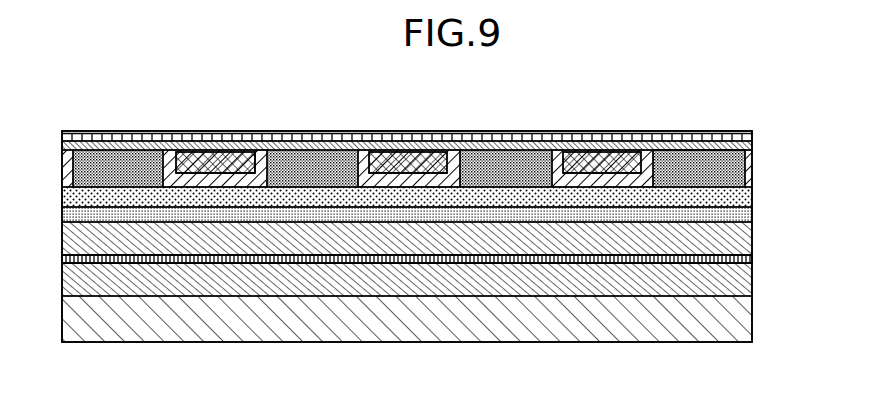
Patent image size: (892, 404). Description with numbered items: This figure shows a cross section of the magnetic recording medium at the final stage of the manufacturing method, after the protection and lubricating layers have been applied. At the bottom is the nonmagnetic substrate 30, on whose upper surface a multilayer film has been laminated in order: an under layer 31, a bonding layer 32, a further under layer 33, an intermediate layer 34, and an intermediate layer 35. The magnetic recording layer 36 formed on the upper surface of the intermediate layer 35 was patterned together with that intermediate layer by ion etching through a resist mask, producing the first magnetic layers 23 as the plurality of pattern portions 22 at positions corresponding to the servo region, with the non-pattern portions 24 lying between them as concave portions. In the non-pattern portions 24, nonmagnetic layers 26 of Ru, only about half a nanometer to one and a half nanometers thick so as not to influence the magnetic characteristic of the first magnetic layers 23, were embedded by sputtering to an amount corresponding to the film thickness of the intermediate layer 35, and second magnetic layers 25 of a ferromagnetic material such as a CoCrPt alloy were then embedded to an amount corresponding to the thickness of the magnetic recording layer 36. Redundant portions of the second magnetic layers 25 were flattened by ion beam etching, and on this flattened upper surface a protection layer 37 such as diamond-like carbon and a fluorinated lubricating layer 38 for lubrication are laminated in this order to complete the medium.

The pattern portion 22 is at (720, 153).
The first magnetic layer 23 is at (119, 160).
The non-pattern portion 24 is at (240, 165).
The second magnetic layer 25 is at (203, 162).
The nonmagnetic layer 26 is at (168, 165).
The nonmagnetic substrate 30 is at (740, 322).
The under layer 31 is at (740, 282).
The bonding layer 32 is at (740, 259).
The under layer 33 is at (740, 238).
The intermediate layer 34 is at (740, 214).
The intermediate layer 35 is at (740, 197).
The magnetic recording layer 36 is at (748, 168).
The protection layer 37 is at (745, 146).
The fluorinated lubricating layer 38 is at (745, 136).